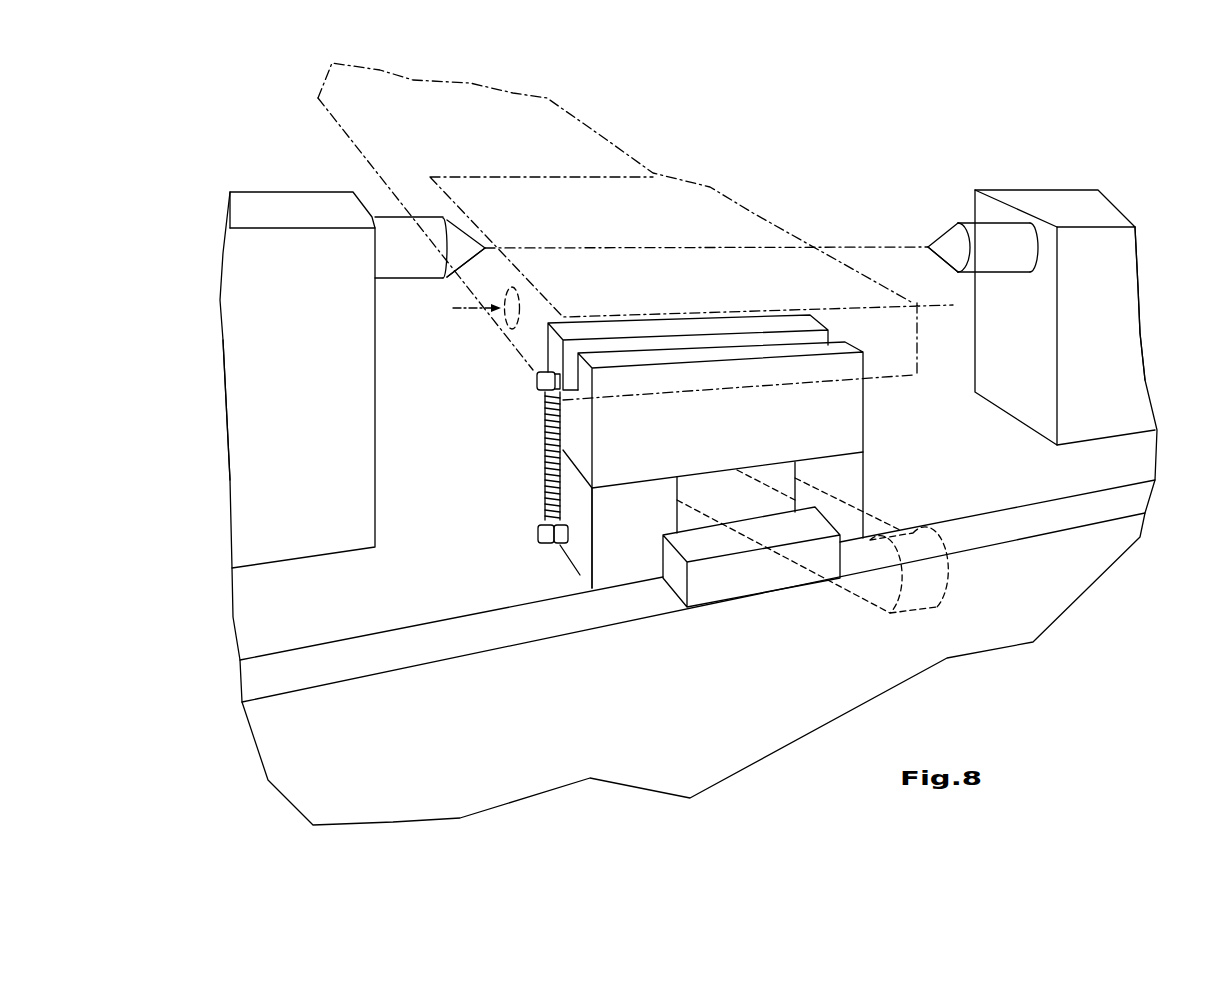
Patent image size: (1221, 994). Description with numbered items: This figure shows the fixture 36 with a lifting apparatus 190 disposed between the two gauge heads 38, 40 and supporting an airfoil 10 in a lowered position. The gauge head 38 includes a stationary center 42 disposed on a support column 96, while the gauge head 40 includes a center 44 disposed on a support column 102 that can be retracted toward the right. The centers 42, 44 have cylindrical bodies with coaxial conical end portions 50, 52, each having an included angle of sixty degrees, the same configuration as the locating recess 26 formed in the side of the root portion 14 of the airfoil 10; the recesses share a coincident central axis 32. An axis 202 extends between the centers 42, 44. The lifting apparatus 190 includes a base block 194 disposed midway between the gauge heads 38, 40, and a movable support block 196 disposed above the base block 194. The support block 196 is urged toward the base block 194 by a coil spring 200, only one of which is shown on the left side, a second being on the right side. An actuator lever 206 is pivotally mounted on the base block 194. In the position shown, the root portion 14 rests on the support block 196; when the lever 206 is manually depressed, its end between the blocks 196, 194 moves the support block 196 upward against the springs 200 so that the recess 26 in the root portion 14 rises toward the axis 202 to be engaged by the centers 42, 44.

The airfoil 10 is at (600, 143).
The root portion 14 is at (740, 227).
The locating recess 26 is at (517, 348).
The central axis 32 is at (473, 310).
The fixture 36 is at (224, 600).
The gauge head 38 is at (260, 190).
The gauge head 40 is at (1071, 185).
The center 42 is at (400, 215).
The center 44 is at (997, 232).
The conical end portion 50 is at (463, 262).
The conical end portion 52 is at (948, 255).
The support column 96 is at (252, 412).
The support column 102 is at (1118, 310).
The lifting apparatus 190 is at (580, 570).
The base block 194 is at (615, 565).
The movable support block 196 is at (845, 420).
The coil spring 200 is at (543, 487).
The axis 202 is at (857, 247).
The actuator lever 206 is at (930, 587).